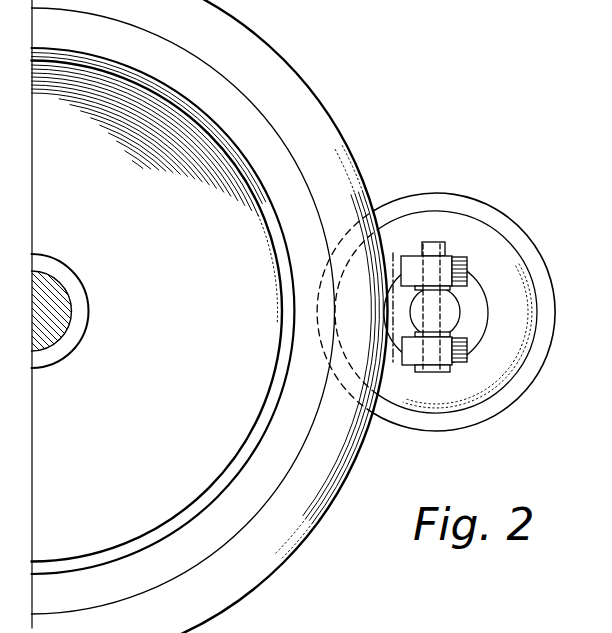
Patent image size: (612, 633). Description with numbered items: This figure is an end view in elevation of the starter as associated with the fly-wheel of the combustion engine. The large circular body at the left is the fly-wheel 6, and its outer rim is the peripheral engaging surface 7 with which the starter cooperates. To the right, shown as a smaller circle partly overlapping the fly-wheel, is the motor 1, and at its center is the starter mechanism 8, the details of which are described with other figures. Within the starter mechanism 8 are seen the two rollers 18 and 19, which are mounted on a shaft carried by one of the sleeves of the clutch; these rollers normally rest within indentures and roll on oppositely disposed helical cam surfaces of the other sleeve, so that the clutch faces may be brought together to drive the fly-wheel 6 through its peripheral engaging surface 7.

The motor 1 is at (527, 250).
The fly-wheel 6 is at (305, 143).
The peripheral engaging surface 7 is at (353, 160).
The starter mechanism 8 is at (472, 300).
The roller 18 is at (457, 257).
The roller 19 is at (465, 363).